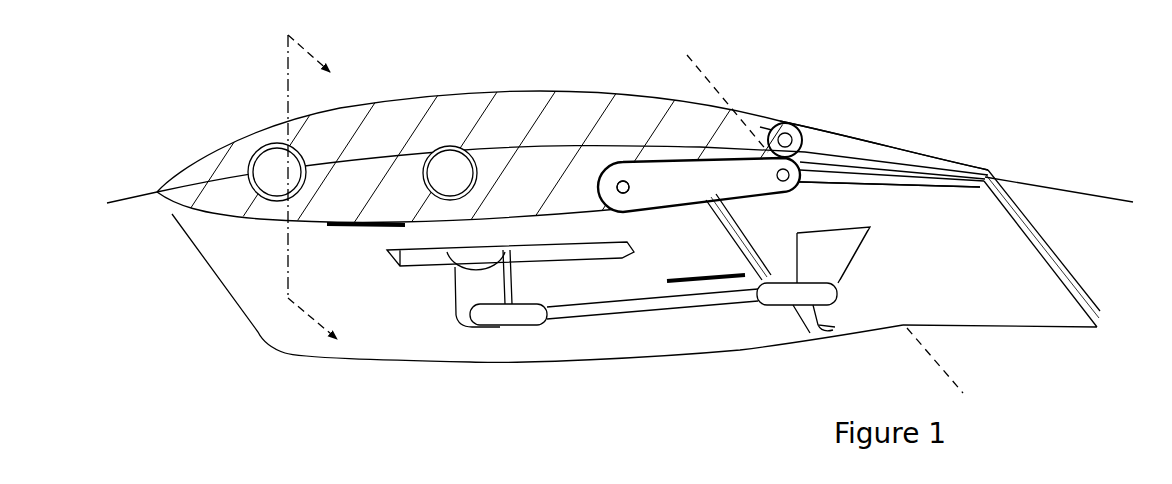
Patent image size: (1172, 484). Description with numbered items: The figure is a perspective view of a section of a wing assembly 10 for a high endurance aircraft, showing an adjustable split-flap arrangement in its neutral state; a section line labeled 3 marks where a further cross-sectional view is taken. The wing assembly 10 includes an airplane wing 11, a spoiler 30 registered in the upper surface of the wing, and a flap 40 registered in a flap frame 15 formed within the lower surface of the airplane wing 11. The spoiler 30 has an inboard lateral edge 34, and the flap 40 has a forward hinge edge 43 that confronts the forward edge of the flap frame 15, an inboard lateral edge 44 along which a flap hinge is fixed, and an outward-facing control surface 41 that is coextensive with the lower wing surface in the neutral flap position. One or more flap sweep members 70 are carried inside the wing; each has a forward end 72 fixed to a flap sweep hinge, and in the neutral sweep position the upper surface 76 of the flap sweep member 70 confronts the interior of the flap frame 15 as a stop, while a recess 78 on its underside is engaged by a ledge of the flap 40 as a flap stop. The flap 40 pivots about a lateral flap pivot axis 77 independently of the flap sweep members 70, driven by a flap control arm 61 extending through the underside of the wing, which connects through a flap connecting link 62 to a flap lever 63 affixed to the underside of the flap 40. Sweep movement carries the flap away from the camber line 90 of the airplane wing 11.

The section line 3- 3 is at (316, 191).
The wing assembly 10 is at (1014, 47).
The airplane wing 11 is at (482, 122).
The flap frame 15 is at (727, 233).
The spoiler 30 is at (983, 128).
The inboard lateral edge 34 is at (830, 143).
The flap 40 is at (983, 336).
The control surface 41 is at (942, 280).
The forward hinge edge 43 is at (806, 336).
The inboard lateral edge 44 is at (842, 175).
The flap control arm 61 is at (465, 290).
The flap connecting link 62 is at (647, 307).
The flap lever 63 is at (818, 246).
The flap sweep member 70 is at (651, 172).
The forward end 72 is at (617, 163).
The upper surface 76 is at (673, 157).
The lateral flap pivot axis 77 is at (937, 360).
The recess 78 is at (738, 190).
The camber line 90 is at (1033, 185).